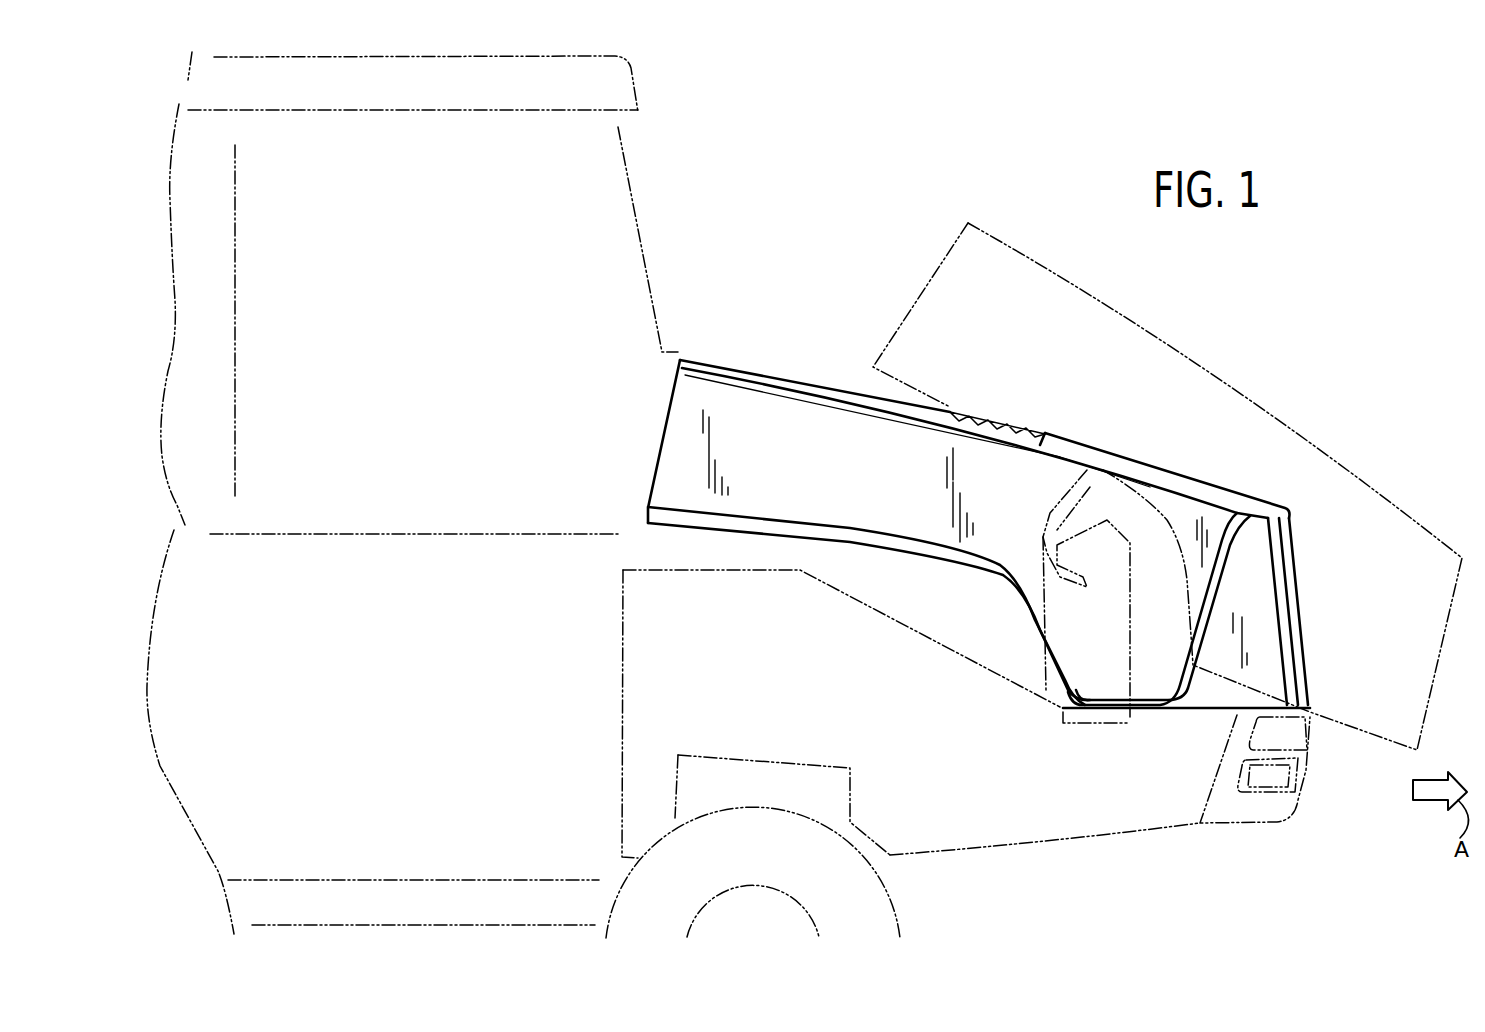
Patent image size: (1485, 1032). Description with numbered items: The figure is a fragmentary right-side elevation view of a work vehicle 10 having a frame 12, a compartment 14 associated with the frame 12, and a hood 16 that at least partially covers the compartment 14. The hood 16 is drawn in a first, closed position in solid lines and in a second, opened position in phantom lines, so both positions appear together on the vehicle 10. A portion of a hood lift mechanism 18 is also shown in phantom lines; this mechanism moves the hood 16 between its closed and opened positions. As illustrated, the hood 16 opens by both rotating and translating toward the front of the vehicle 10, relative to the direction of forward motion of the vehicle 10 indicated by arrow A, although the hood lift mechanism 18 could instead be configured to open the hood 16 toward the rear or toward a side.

The work vehicle 10 is at (1327, 332).
The frame 12 is at (957, 852).
The compartment 14 is at (892, 578).
The hood 16 is at (1175, 345).
The hood lift mechanism 18 is at (1189, 547).